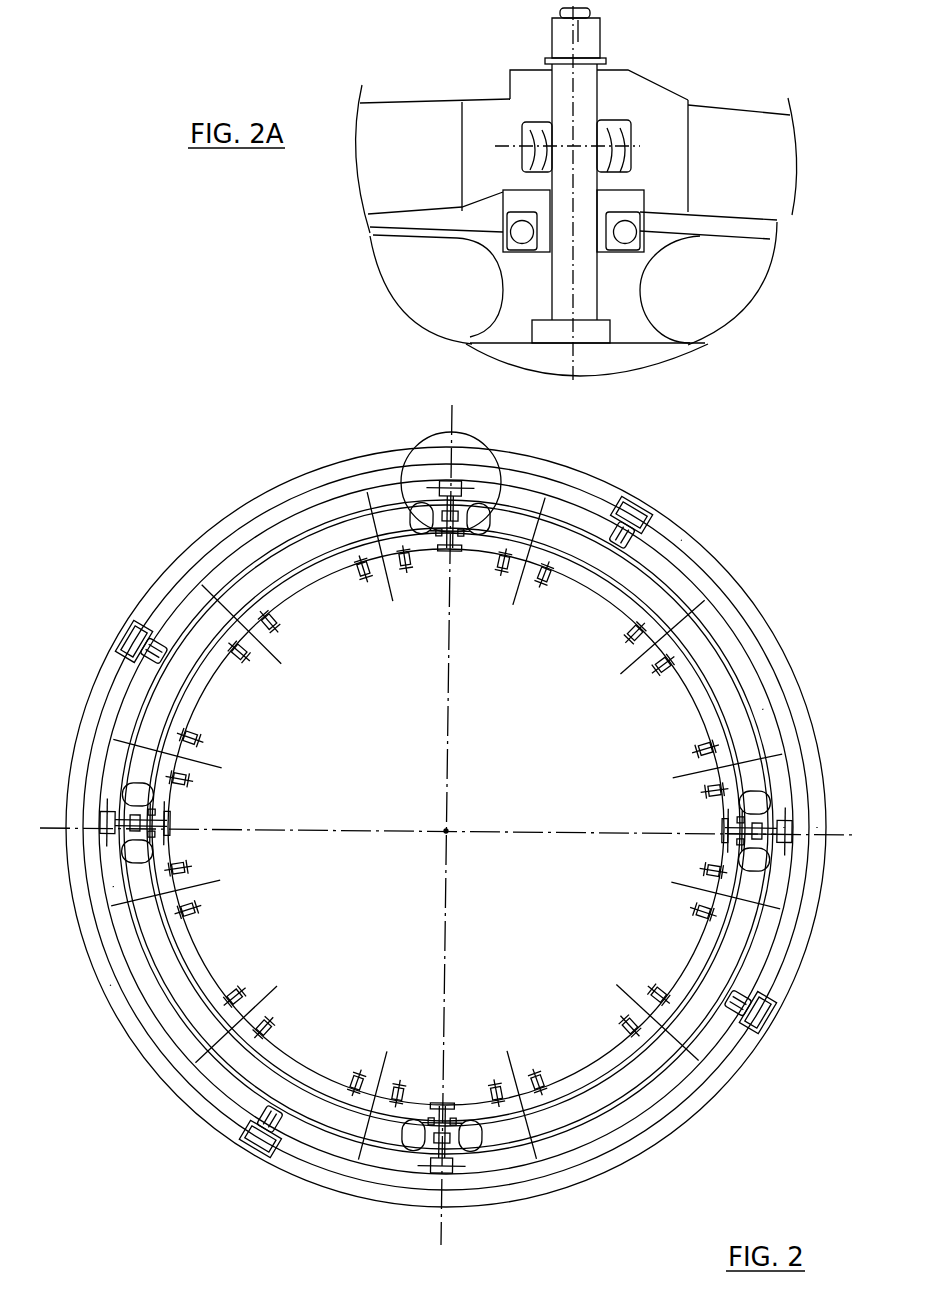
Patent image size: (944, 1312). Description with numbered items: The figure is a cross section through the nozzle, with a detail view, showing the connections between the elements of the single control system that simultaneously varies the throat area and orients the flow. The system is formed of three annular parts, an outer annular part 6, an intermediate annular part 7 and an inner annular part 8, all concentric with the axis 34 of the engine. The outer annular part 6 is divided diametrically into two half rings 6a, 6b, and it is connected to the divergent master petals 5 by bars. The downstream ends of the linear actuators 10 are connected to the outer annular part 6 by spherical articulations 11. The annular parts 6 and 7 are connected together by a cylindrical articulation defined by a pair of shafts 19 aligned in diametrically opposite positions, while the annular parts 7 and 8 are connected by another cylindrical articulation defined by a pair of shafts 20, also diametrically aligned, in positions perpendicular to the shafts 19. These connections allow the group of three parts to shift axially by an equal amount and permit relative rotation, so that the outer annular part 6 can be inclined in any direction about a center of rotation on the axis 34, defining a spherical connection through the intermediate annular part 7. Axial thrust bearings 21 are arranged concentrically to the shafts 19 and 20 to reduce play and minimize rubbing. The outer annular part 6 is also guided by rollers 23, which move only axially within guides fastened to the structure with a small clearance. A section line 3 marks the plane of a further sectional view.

In FIG. 2, the section line 3- 3 is at (830, 740).
In FIG. 2, the divergent master petal 5 is at (672, 474).
In FIG. 2, the outer annular part 6 is at (740, 665).
In FIG. 2A, the half ring 6a is at (737, 158).
In FIG. 2, the half ring 6a is at (473, 827).
In FIG. 2A, the half ring 6b is at (444, 119).
In FIG. 2, the half ring 6b is at (446, 804).
In FIG. 2, the intermediate annular part 7 is at (464, 827).
In FIG. 2, the inner annular part 8 is at (692, 688).
In FIG. 2, the linear actuator 10 is at (640, 998).
In FIG. 2A, the spherical articulation 11 is at (615, 140).
In FIG. 2, the spherical articulation 11 is at (108, 828).
In FIG. 2A, the shaft 19 is at (641, 369).
In FIG. 2, the shaft 19 is at (445, 797).
In FIG. 2, the shaft 20 is at (447, 919).
In FIG. 2A, the axial thrust bearing 21 is at (686, 267).
In FIG. 2, the axial thrust bearing 21 is at (446, 826).
In FIG. 2, the roller 23 is at (467, 844).
In FIG. 2, the axis of the engine 34 is at (446, 831).